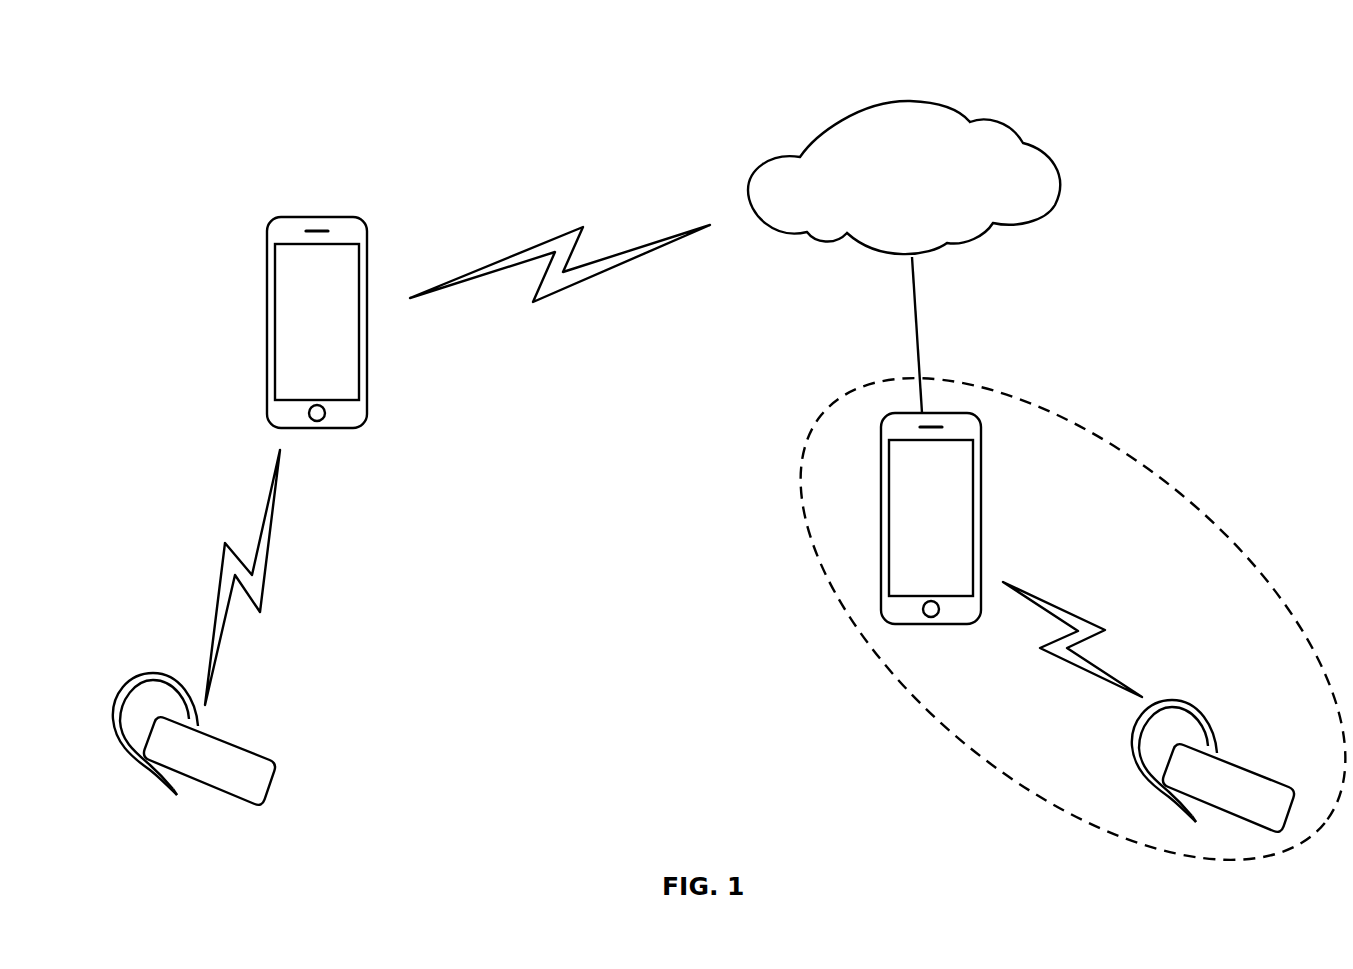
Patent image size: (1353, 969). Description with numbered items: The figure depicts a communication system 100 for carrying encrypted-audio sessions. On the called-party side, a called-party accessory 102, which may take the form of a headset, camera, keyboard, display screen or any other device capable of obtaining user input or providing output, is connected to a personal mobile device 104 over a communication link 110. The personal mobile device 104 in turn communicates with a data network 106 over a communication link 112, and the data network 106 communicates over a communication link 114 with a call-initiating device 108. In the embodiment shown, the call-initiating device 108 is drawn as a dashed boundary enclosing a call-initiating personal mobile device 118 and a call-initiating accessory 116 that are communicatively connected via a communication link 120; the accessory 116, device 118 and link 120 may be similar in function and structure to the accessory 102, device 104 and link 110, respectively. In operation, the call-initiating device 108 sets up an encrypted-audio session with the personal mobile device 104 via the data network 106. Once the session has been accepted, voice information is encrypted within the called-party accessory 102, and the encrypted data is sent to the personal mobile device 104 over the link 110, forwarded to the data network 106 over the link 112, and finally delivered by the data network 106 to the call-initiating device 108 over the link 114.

The communication system 100 is at (135, 116).
The called-party accessory 102 is at (152, 673).
The personal mobile device 104 is at (303, 217).
The data network 106 is at (905, 100).
The call-initiating device 108 is at (1087, 433).
The communication link 110 is at (268, 570).
The communication link 112 is at (572, 227).
The communication link 114 is at (912, 302).
The call-initiating accessory 116 is at (1167, 702).
The call-initiating personal mobile device 118 is at (983, 492).
The communication link 120 is at (1062, 660).